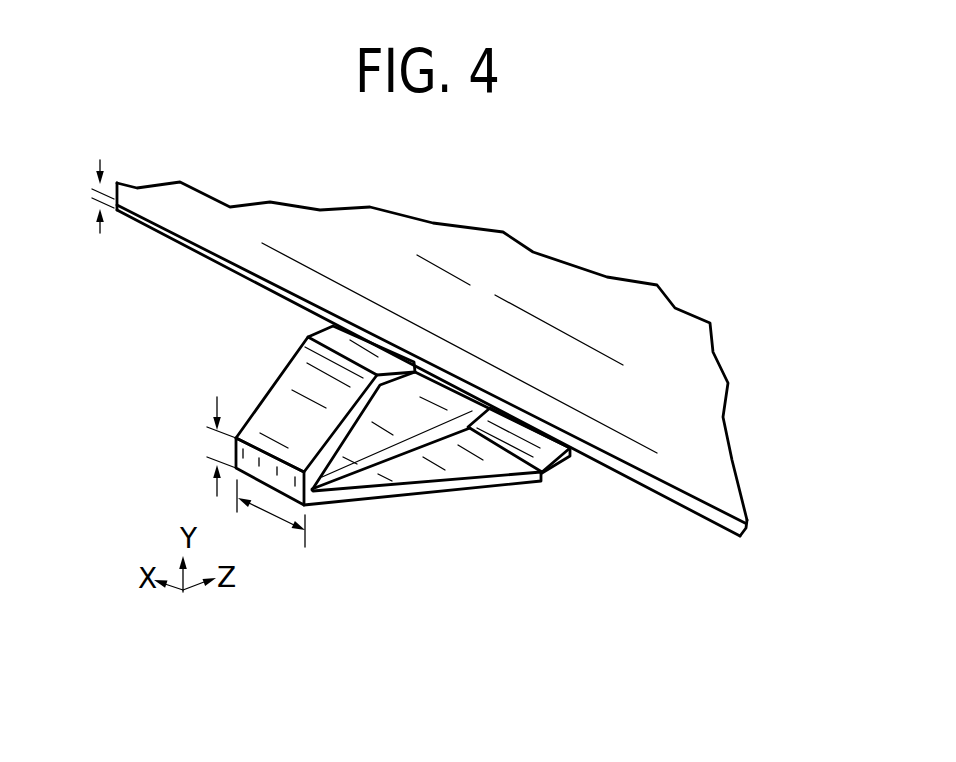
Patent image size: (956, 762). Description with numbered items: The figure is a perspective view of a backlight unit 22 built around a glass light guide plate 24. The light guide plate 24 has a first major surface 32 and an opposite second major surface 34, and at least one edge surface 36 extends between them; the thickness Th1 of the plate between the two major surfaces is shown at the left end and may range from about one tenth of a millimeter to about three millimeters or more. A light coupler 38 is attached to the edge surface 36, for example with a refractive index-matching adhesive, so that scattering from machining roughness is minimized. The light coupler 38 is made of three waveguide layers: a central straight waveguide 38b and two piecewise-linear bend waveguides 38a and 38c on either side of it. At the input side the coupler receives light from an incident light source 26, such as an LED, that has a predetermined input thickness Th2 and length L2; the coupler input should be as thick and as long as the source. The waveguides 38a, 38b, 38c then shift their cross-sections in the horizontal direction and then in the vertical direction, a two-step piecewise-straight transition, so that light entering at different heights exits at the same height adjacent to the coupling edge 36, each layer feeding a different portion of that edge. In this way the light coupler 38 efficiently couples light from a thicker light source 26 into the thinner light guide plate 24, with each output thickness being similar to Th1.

The backlight unit 22 is at (427, 338).
The glass light guide plate 24 is at (208, 300).
The incident light source 26 is at (197, 472).
The first major surface 32 is at (278, 203).
The second major surface 34 is at (152, 245).
The edge surface 36 is at (743, 538).
The light coupler 38 is at (349, 482).
The piecewise-linear bend waveguide 38a is at (346, 473).
The central straight waveguide 38b is at (413, 473).
The piecewise-linear bend waveguide 38c is at (506, 498).
The thickness of the light guide plate Th1 is at (95, 177).
The input thickness of the light source Th2 is at (197, 446).
The input length of the light source L2 is at (271, 520).